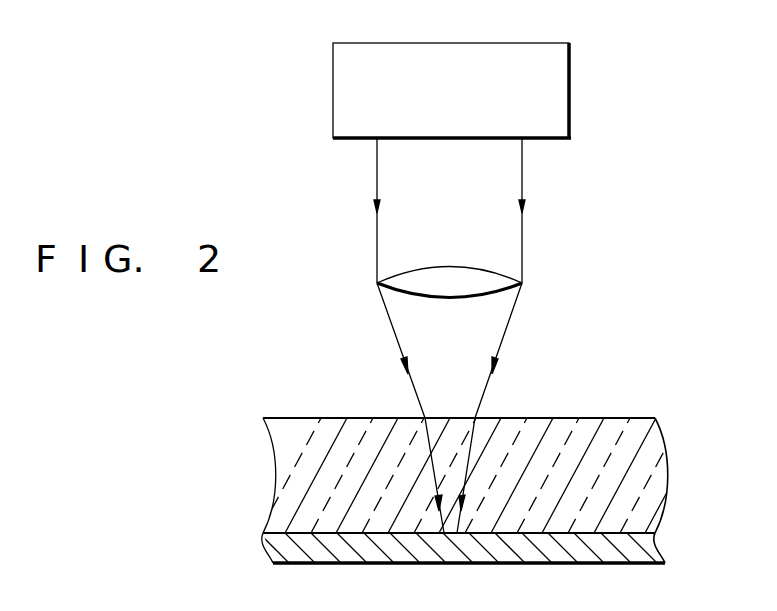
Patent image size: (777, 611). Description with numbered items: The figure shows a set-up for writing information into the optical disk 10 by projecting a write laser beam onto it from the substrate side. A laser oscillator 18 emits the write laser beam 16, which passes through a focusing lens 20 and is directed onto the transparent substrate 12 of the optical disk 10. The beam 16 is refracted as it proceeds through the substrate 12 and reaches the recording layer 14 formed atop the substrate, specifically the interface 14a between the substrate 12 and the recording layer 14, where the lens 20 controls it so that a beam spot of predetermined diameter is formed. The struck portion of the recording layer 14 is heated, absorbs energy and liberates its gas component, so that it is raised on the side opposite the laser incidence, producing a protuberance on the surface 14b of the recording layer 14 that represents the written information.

The optical disk 10 is at (499, 505).
The substrate 12 is at (645, 447).
The recording layer 14 is at (645, 548).
The interface 14a is at (638, 526).
The surface of the recording layer 14b is at (638, 566).
The write laser beam 16 is at (525, 240).
The laser oscillator 18 is at (553, 125).
The focusing lens 20 is at (480, 280).